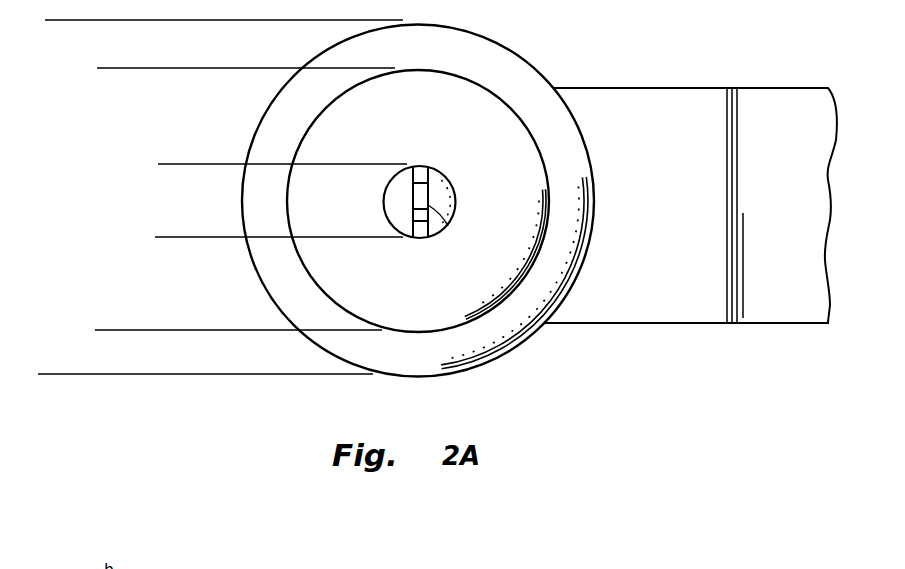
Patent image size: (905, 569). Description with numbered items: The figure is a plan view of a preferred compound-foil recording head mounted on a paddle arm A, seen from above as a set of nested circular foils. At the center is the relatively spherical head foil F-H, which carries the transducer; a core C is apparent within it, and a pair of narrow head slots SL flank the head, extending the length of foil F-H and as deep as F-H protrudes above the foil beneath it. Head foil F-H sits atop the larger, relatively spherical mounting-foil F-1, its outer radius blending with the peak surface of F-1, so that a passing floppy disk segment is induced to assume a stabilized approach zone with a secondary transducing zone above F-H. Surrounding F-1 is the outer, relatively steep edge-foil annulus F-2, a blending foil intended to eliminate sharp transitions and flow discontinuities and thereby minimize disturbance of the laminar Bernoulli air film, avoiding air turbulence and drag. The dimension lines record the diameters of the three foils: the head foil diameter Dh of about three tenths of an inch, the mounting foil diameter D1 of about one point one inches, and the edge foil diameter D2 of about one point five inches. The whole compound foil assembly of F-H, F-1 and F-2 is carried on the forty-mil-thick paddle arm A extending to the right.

The mounting-foil F-1 is at (490, 117).
The edge-foil annulus F-2 is at (505, 317).
The head foil F-H is at (444, 190).
The head slots SL is at (415, 166).
The core C is at (448, 226).
The paddle arm A is at (755, 86).
The diameter of mounting foil D1 is at (111, 329).
The diameter of edge foil D2 is at (52, 22).
The diameter of head foil Dh is at (168, 120).